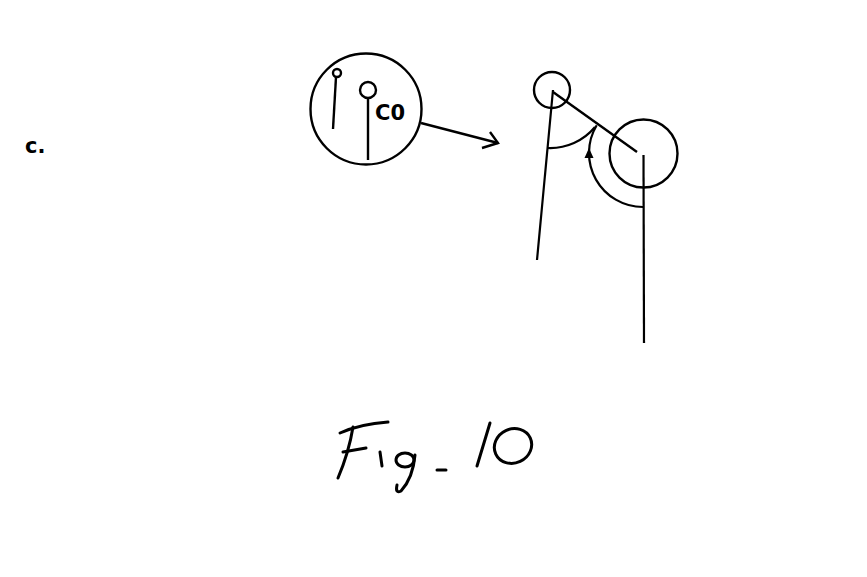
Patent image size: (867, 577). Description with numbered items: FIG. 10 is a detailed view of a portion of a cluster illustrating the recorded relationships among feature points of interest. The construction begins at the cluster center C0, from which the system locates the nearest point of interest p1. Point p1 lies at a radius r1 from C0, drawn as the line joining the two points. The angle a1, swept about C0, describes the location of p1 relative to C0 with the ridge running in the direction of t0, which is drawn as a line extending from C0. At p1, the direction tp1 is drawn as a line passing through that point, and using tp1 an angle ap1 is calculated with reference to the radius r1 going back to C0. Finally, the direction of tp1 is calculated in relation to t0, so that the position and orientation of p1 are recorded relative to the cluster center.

The nearest point of interest p1 is at (558, 78).
The cluster center C0 is at (666, 154).
The radius r1 is at (595, 122).
The ridge direction at p1 tp1 is at (543, 192).
The ridge direction at C0 t0 is at (655, 269).
The angle at p1 ap1 is at (572, 150).
The angle a1 is at (614, 176).